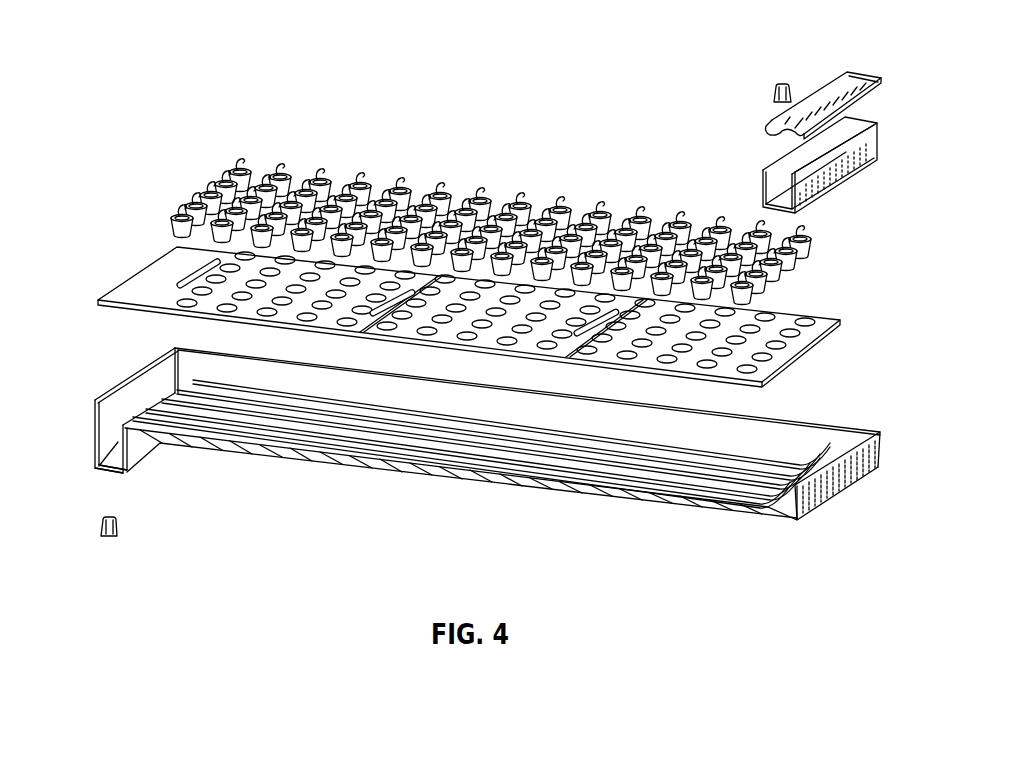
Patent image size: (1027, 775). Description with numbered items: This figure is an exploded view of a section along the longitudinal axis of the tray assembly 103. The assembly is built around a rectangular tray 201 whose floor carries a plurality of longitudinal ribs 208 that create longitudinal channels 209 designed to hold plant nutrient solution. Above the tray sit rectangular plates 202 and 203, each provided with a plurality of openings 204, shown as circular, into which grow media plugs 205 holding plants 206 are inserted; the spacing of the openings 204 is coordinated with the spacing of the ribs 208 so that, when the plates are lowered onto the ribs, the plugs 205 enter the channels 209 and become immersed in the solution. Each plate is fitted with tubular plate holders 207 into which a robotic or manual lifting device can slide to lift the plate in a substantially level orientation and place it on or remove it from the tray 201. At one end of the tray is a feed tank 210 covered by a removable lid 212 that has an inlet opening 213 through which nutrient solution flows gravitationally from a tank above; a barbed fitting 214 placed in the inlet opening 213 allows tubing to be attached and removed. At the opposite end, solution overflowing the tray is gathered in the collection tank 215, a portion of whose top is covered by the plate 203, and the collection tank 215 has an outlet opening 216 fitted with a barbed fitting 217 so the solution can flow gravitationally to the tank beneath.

The tray assembly 103 is at (172, 113).
The rectangular tray 201 is at (873, 453).
The rectangular plate 202 is at (838, 327).
The rectangular plate 203 is at (128, 292).
The opening 204 is at (778, 372).
The grow media plug 205 is at (797, 272).
The plant 206 is at (830, 228).
The tubular plate holder 207 is at (193, 273).
The longitudinal rib 208 is at (625, 497).
The longitudinal channel 209 is at (784, 520).
The feed tank 210 is at (840, 154).
The removable lid 212 is at (875, 90).
The inlet opening 213 is at (767, 130).
The fitting 214 is at (773, 90).
The collection tank 215 is at (110, 450).
The outlet opening 216 is at (108, 487).
The fitting 217 is at (120, 528).